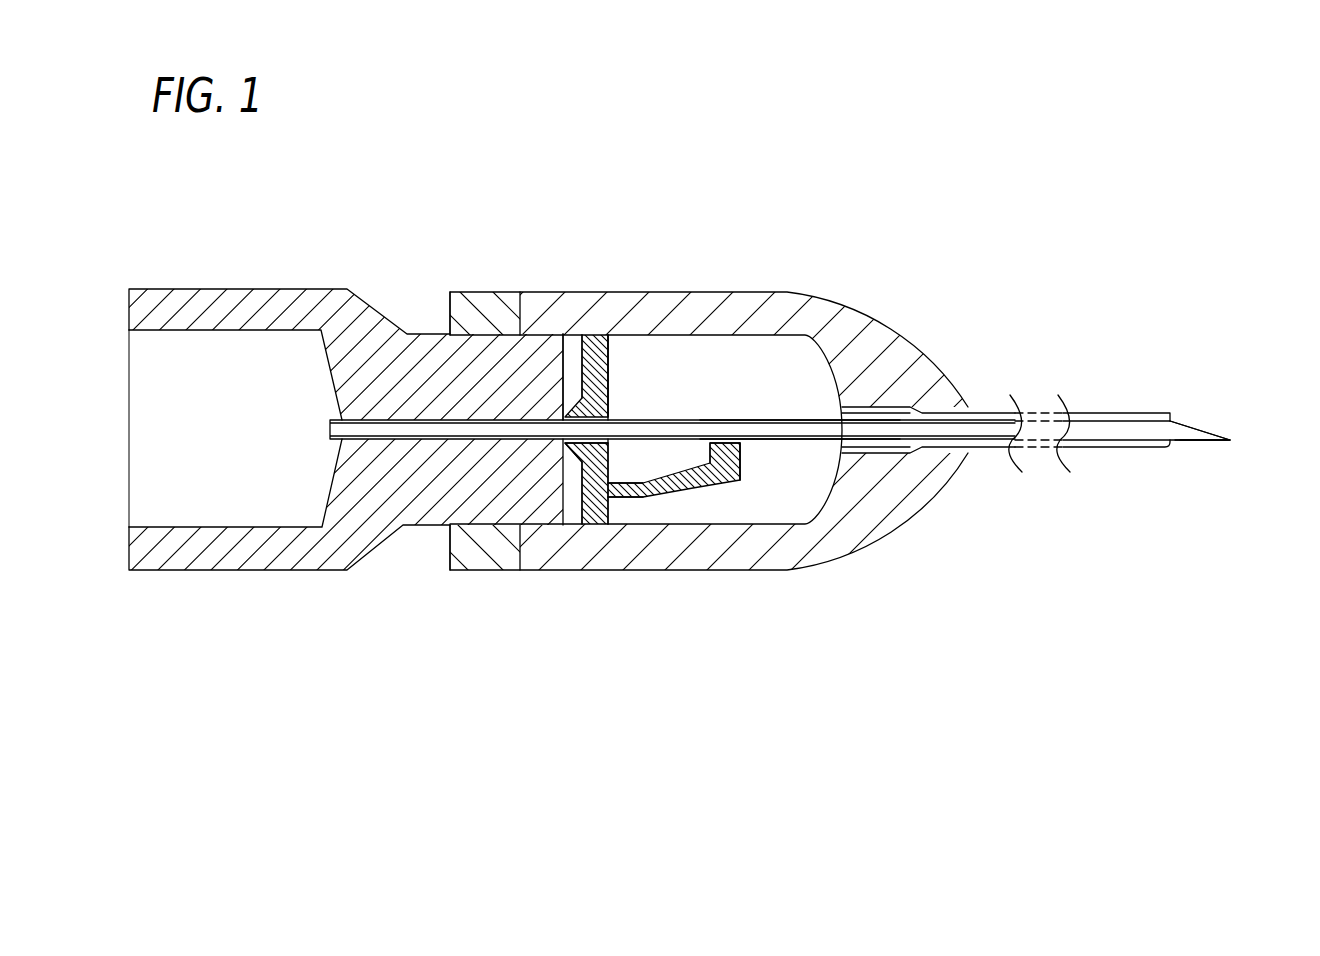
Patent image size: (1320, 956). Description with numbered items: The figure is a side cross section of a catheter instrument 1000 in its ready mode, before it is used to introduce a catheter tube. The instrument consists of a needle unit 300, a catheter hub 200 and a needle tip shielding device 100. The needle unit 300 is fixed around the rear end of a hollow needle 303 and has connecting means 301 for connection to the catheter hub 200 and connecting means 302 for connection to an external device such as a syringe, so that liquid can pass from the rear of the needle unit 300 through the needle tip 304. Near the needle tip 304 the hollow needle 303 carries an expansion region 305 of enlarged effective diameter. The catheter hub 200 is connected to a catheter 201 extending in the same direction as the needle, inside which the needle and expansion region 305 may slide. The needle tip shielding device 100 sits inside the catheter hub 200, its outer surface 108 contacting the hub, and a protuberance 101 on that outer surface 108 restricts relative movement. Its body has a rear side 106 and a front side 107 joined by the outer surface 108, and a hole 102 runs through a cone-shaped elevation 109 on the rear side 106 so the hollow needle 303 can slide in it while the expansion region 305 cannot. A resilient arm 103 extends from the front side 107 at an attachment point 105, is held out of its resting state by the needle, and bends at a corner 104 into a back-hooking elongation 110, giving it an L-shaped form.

The catheter instrument 1000 is at (838, 168).
The needle unit 300 is at (305, 308).
The connecting means 301 is at (520, 337).
The connecting means 302 is at (253, 333).
The hollow needle 303 is at (790, 420).
The needle tip 304 is at (1229, 441).
The expansion region 305 is at (1181, 443).
The catheter hub 200 is at (838, 318).
The catheter 201 is at (1112, 408).
The needle tip shielding device 100 is at (609, 372).
The protuberance 101 is at (609, 346).
The hole 102 is at (628, 408).
The resilient arm 103 is at (686, 489).
The corner 104 is at (712, 446).
The attachment point 105 is at (630, 470).
The rear side 106 is at (567, 346).
The front side 107 is at (612, 346).
The outer surface 108 is at (596, 346).
The cone-shaped elevation 109 is at (582, 448).
The back-hooking elongation 110 is at (742, 442).